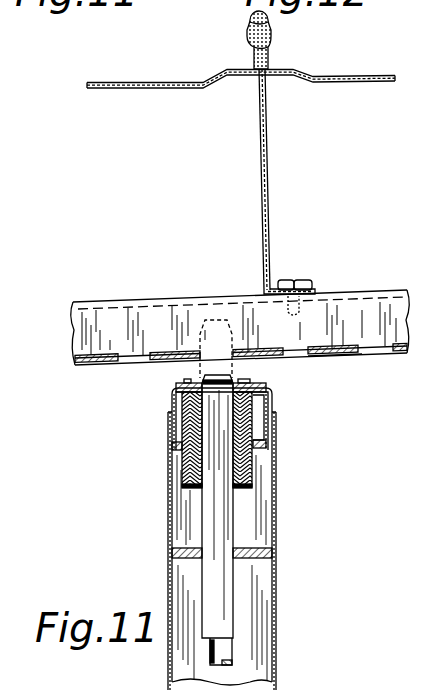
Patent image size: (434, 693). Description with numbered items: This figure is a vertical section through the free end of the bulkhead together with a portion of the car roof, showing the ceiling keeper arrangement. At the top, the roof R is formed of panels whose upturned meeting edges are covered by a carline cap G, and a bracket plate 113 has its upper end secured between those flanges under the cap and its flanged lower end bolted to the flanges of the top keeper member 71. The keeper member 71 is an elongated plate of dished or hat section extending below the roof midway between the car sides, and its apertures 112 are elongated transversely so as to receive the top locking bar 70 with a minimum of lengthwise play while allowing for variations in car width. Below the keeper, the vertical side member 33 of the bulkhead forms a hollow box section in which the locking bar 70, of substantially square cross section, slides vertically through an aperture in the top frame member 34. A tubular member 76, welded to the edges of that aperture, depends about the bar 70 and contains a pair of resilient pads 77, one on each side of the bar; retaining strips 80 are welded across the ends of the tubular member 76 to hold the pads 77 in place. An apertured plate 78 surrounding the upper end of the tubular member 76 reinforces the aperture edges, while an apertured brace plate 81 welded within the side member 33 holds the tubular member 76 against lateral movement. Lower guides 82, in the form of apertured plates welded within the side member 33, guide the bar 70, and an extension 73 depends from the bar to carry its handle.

The roof R is at (143, 82).
The carline cap G is at (254, 51).
The bracket plate 113 is at (261, 152).
The top keeper member 71 is at (142, 307).
The aperture 112 is at (366, 353).
The vertical side member 33 is at (168, 529).
The top frame member 34 is at (170, 400).
The apertured plate 78 is at (266, 387).
The resilient pad 77 is at (183, 467).
The tubular member 76 is at (254, 412).
The apertured brace plate 81 is at (171, 446).
The retaining strip 80 is at (195, 381).
The lower guide 82 is at (275, 553).
The locking bar 70 is at (214, 596).
The extension 73 is at (210, 661).